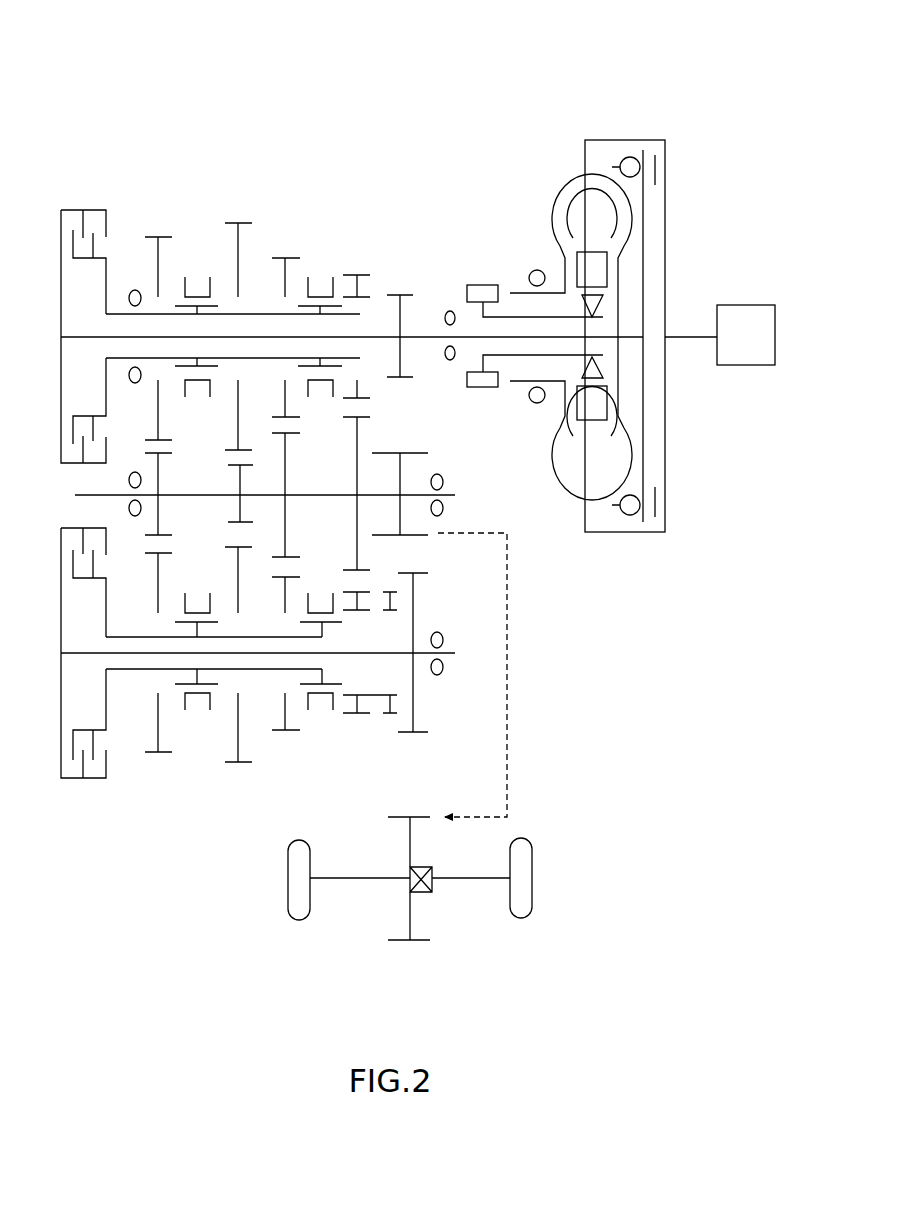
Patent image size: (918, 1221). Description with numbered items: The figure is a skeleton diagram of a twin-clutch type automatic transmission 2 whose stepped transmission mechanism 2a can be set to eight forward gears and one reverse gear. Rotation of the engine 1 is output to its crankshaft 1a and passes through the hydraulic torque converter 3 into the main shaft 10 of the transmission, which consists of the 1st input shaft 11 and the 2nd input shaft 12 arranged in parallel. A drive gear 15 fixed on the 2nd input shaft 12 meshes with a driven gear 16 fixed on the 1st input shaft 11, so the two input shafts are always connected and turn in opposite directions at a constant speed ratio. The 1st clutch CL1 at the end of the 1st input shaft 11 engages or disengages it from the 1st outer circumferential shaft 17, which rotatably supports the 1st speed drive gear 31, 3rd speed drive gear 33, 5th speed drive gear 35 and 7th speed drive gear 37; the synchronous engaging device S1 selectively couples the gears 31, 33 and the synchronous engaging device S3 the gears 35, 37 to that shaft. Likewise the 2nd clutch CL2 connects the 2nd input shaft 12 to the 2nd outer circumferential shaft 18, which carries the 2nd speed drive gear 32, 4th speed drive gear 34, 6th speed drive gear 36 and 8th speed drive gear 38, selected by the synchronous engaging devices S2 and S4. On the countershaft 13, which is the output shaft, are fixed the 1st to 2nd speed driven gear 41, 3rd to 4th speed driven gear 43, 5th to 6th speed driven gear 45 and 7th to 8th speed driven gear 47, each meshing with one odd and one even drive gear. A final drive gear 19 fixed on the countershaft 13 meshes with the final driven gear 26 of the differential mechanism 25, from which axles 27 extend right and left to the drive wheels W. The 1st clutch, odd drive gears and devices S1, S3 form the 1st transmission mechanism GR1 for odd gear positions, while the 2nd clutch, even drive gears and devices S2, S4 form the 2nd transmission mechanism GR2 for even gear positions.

The engine 1 is at (765, 305).
The crankshaft 1a is at (685, 337).
The transmission 2 is at (538, 116).
The stepped transmission mechanism 2a is at (405, 160).
The hydraulic torque converter 3 is at (616, 138).
The main shaft 10 is at (296, 628).
The 1st input shaft 11 is at (445, 653).
The 2nd input shaft 12 is at (430, 337).
The countershaft 13 is at (448, 495).
The drive gear 15 is at (400, 295).
The driven gear 16 is at (415, 573).
The 1st outer circumferential shaft 17 is at (248, 637).
The 2nd outer circumferential shaft 18 is at (248, 314).
The final drive gear 19 is at (418, 453).
The differential mechanism 25 is at (432, 870).
The final driven gear 26 is at (418, 817).
The axle 27 is at (370, 878).
The 1st speed drive gear 31 is at (357, 713).
The 2nd speed drive gear 32 is at (357, 275).
The 3rd speed drive gear 33 is at (285, 730).
The 4th speed drive gear 34 is at (285, 258).
The 5th speed drive gear 35 is at (158, 752).
The 6th speed drive gear 36 is at (158, 237).
The 7th speed drive gear 37 is at (238, 762).
The 8th speed drive gear 38 is at (238, 223).
The 1st to 2nd speed driven gear 41 is at (357, 445).
The 3rd to 4th speed driven gear 43 is at (290, 470).
The 5th to 6th speed driven gear 45 is at (165, 480).
The 7th to 8th speed driven gear 47 is at (242, 492).
The 1st clutch CL1 is at (72, 780).
The 2nd clutch CL2 is at (72, 208).
The 1st transmission mechanism GR1 is at (200, 800).
The 2nd transmission mechanism GR2 is at (190, 188).
The 1st to 3rd speed synchronous engaging device S1 is at (317, 590).
The 2nd to 4th speed synchronous engaging device S2 is at (318, 276).
The 5th to 7th speed synchronous engaging device S3 is at (192, 590).
The 6th to 8th speed synchronous engaging device S4 is at (193, 276).
The drive wheel W is at (288, 878).